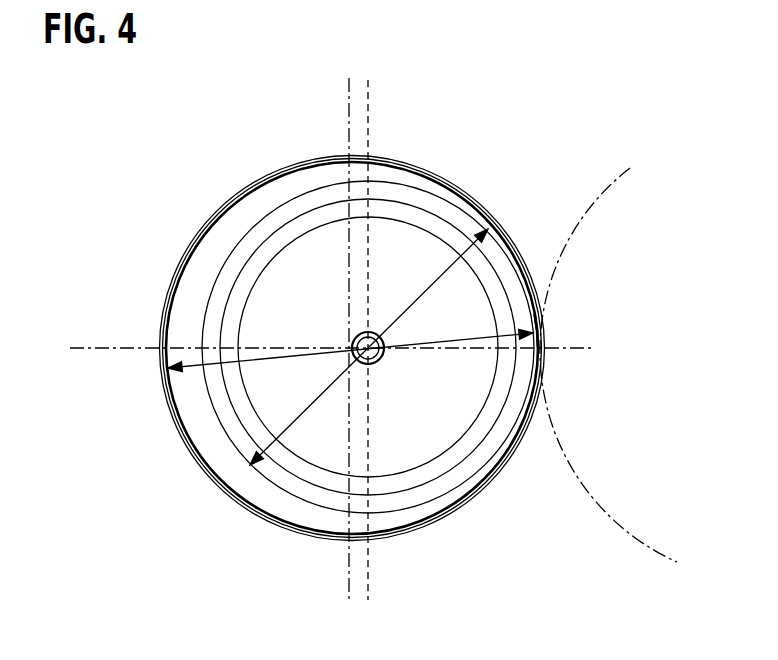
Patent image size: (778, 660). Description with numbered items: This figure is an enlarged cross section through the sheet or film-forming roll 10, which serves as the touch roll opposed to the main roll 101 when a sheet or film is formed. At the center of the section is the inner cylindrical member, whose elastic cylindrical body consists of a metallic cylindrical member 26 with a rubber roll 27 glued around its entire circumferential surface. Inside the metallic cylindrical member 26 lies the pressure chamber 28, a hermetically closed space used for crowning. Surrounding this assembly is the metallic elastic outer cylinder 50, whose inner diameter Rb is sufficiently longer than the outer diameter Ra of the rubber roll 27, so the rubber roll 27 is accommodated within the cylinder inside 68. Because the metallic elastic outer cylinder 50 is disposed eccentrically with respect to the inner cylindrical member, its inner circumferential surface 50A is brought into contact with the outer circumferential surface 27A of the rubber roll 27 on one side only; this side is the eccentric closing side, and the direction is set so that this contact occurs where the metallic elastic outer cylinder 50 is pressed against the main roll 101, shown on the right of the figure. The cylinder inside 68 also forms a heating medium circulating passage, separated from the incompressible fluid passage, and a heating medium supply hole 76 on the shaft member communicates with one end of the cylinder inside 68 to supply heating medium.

The sheet or film-forming roll 10 is at (140, 206).
The metallic elastic outer cylinder 50 is at (430, 172).
The inner circumferential surface 50A is at (542, 380).
The cylinder inside 68 is at (208, 448).
The outer circumferential surface 27A is at (540, 358).
The pressure chamber 28 is at (420, 256).
The rubber roll 27 is at (497, 255).
The metallic cylindrical member 26 is at (497, 307).
The heating medium supply hole 76 is at (380, 362).
The main roll 101 is at (620, 527).
The outer diameter Ra is at (295, 420).
The inner diameter Rb is at (450, 338).